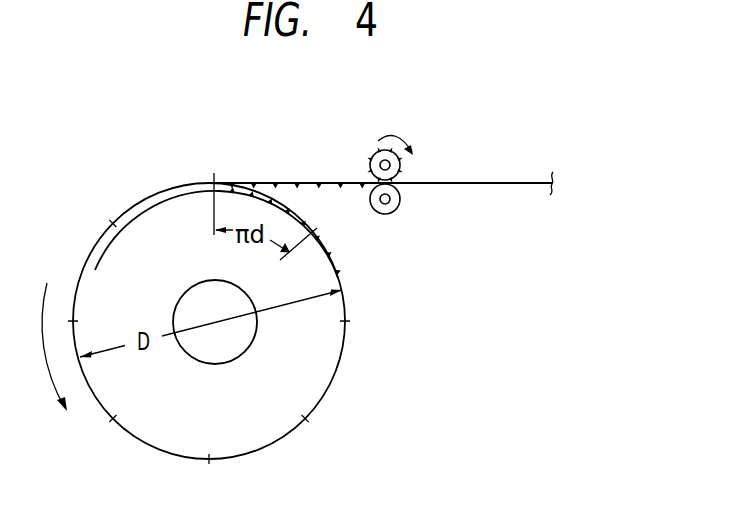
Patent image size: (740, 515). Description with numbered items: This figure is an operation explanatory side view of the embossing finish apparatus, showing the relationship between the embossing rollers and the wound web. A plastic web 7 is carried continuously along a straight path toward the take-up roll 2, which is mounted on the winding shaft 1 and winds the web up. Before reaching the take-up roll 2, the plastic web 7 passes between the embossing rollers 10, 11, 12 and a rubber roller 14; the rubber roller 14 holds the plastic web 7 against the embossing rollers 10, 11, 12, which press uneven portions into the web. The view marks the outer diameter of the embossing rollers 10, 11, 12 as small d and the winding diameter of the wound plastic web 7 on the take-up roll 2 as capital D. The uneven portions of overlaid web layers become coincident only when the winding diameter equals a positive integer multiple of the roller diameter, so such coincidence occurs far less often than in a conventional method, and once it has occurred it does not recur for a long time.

The winding shaft 1 is at (228, 352).
The take-up roll 2 is at (330, 364).
The plastic web 7 is at (477, 183).
The embossing roller 10 is at (343, 131).
The embossing roller 11 is at (359, 133).
The embossing roller 12 is at (372, 157).
The rubber roller 14 is at (384, 214).